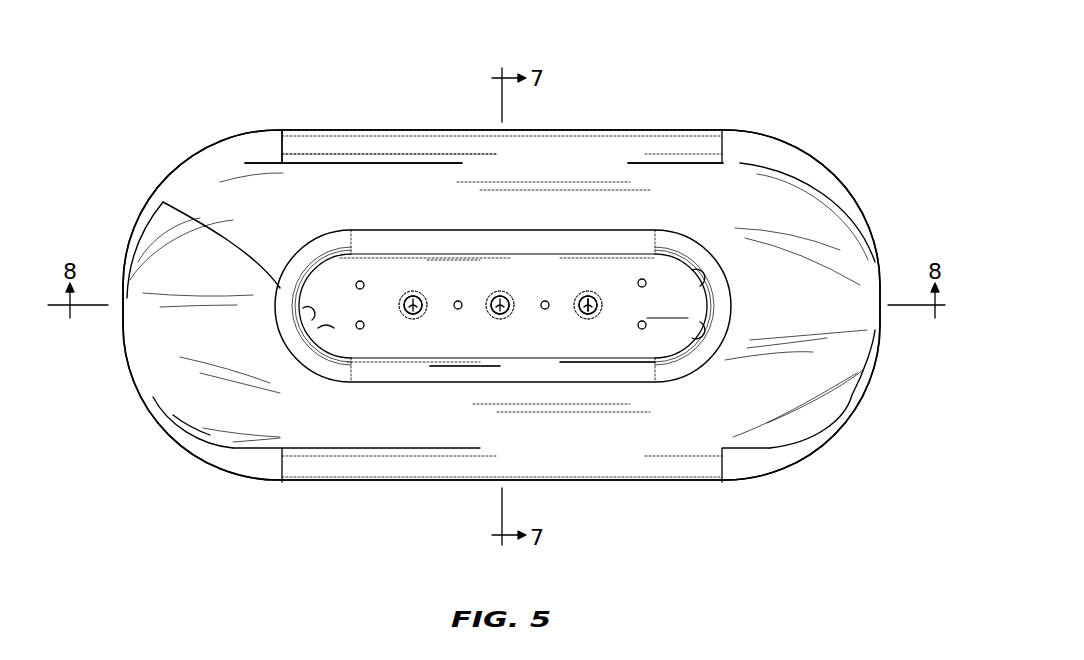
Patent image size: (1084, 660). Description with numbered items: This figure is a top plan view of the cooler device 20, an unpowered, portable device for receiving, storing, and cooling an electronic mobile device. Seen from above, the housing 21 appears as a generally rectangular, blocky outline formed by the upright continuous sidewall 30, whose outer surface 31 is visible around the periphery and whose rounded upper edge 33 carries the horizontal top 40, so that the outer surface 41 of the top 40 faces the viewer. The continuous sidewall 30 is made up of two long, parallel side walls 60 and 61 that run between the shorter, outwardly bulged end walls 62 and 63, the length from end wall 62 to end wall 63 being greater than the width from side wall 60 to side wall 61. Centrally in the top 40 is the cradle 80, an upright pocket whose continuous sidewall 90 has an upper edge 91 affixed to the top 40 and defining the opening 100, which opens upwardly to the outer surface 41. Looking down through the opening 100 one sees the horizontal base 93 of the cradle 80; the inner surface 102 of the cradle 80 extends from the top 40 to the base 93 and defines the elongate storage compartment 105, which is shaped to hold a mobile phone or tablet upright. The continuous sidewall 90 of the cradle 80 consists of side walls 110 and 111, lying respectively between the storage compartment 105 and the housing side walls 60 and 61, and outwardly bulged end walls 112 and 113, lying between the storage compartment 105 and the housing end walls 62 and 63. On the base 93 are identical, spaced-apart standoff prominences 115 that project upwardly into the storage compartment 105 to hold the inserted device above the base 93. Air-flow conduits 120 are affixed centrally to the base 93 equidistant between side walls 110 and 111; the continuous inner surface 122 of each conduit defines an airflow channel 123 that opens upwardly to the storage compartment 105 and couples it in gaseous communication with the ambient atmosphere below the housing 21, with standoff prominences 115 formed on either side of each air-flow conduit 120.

The cooler device 20 is at (792, 92).
The housing 21 is at (852, 182).
The continuous sidewall 30 is at (275, 129).
The outer surface 31 is at (238, 462).
The upper edge 33 is at (700, 130).
The top 40 is at (352, 162).
The outer surface 41 is at (318, 148).
The side wall 60 is at (628, 338).
The side wall 61 is at (453, 130).
The end wall 62 is at (163, 387).
The end wall 63 is at (862, 255).
The cradle 80 is at (310, 335).
The continuous sidewall 90 is at (696, 332).
The upper edge 91 is at (163, 202).
The base 93 is at (332, 330).
The opening 100 is at (645, 330).
The inner surface 102 is at (463, 256).
The storage compartment 105 is at (668, 305).
The side wall 110 is at (532, 350).
The side wall 111 is at (586, 296).
The end wall 112 is at (318, 325).
The end wall 113 is at (710, 310).
The standoff prominences 115 is at (357, 282).
The air-flow conduits 120 is at (408, 296).
The inner surface 122 is at (413, 316).
The airflow channel 123 is at (413, 296).